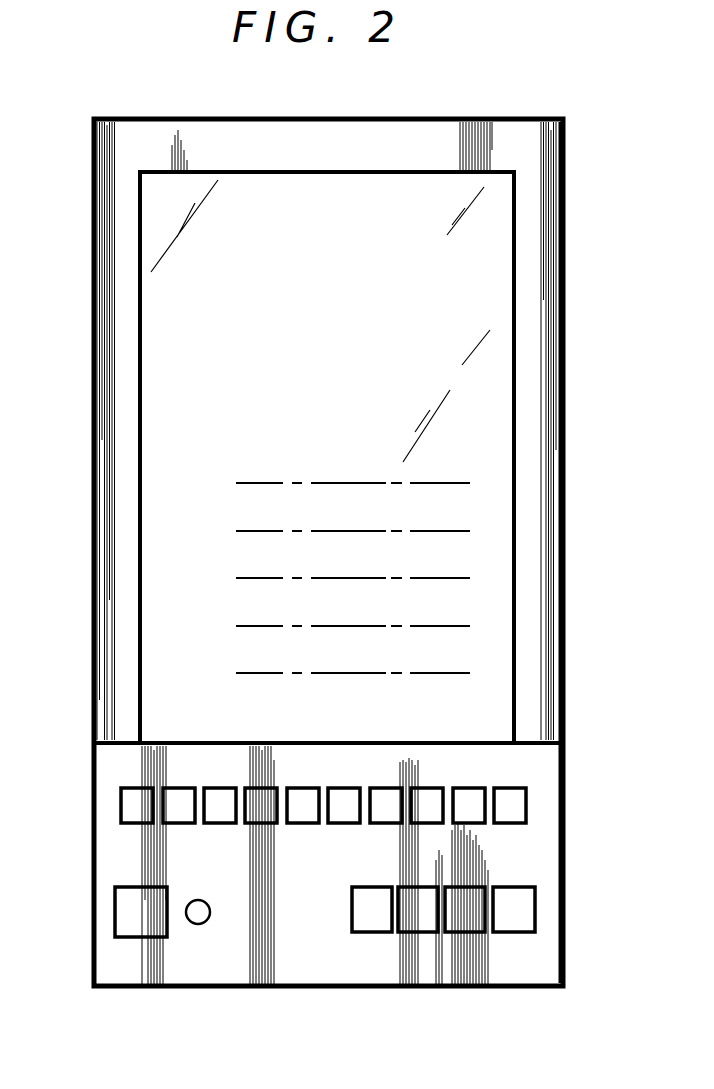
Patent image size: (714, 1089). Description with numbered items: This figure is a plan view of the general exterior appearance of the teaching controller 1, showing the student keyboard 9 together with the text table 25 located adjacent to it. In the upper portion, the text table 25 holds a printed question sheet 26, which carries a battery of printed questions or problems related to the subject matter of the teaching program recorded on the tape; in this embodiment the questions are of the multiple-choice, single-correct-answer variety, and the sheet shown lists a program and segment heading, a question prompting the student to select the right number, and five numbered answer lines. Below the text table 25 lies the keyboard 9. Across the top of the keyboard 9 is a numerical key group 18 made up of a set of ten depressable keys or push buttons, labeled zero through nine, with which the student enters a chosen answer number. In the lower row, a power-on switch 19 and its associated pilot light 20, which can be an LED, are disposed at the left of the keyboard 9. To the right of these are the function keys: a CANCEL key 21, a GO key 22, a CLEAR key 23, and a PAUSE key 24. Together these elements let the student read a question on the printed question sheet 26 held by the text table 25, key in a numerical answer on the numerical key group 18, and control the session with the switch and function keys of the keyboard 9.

The teaching controller 1 is at (505, 101).
The keyboard 9 is at (88, 866).
The numerical key group 18 is at (531, 806).
The power-on switch 19 is at (140, 937).
The pilot light 20 is at (198, 924).
The CANCEL key 21 is at (372, 932).
The GO key 22 is at (424, 932).
The CLEAR key 23 is at (470, 932).
The PAUSE key 24 is at (520, 932).
The text table 25 is at (540, 456).
The printed question sheet 26 is at (498, 272).